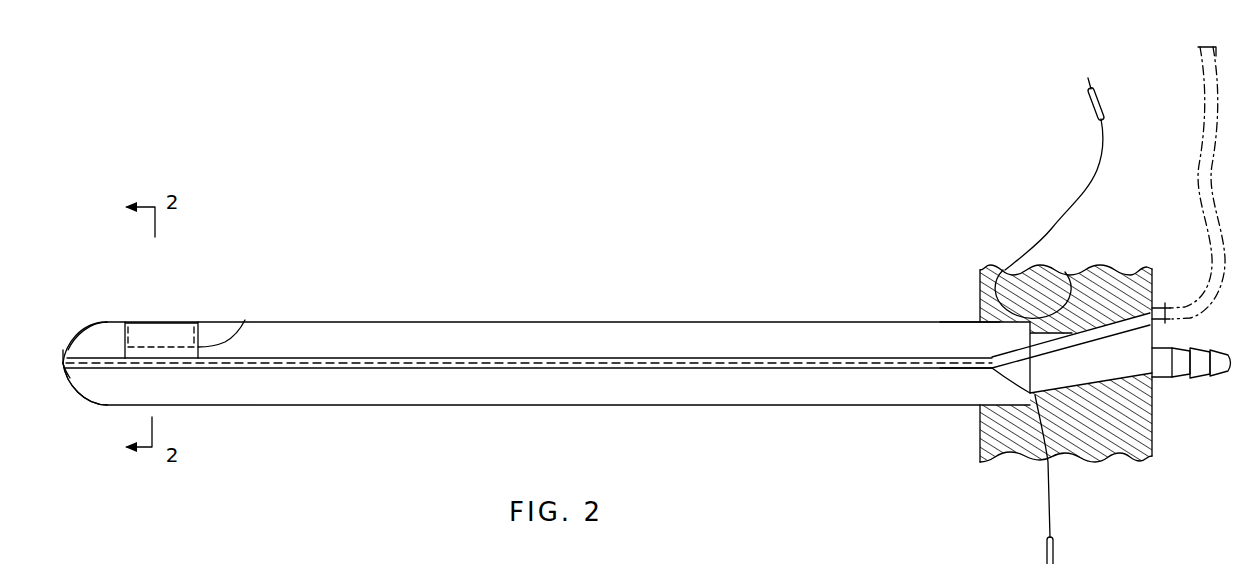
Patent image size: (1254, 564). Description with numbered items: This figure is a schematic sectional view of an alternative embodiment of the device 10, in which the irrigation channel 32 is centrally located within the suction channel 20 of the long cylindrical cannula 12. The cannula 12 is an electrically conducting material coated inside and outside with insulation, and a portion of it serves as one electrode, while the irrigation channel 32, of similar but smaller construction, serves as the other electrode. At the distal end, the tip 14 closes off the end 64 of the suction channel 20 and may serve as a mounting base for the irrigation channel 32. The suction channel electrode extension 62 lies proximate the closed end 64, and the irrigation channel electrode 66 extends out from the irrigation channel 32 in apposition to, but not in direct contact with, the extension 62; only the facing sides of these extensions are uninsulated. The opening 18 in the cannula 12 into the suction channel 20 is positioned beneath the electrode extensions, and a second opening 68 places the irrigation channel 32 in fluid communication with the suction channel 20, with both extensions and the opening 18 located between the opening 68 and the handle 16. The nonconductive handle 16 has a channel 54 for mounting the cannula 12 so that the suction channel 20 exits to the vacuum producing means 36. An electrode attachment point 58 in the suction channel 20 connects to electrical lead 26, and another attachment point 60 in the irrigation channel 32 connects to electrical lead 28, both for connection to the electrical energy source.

The device 10 is at (620, 258).
The cannula 12 is at (362, 322).
The tip 14 is at (63, 363).
The handle 16 is at (1113, 448).
The opening 18 is at (172, 322).
The suction channel 20 is at (832, 390).
The electrical lead 26 is at (1102, 165).
The electrical lead 28 is at (1047, 507).
The irrigation channel 32 is at (702, 368).
The vacuum producing means 36 is at (1137, 358).
The channel 54 is at (1063, 282).
The electrode attachment point 58 is at (947, 320).
The electrode attachment point 60 is at (945, 370).
The suction channel electrode extension 62 is at (203, 333).
The closed end 64 is at (68, 378).
The irrigation channel electrode 66 is at (245, 320).
The second opening 68 is at (83, 353).